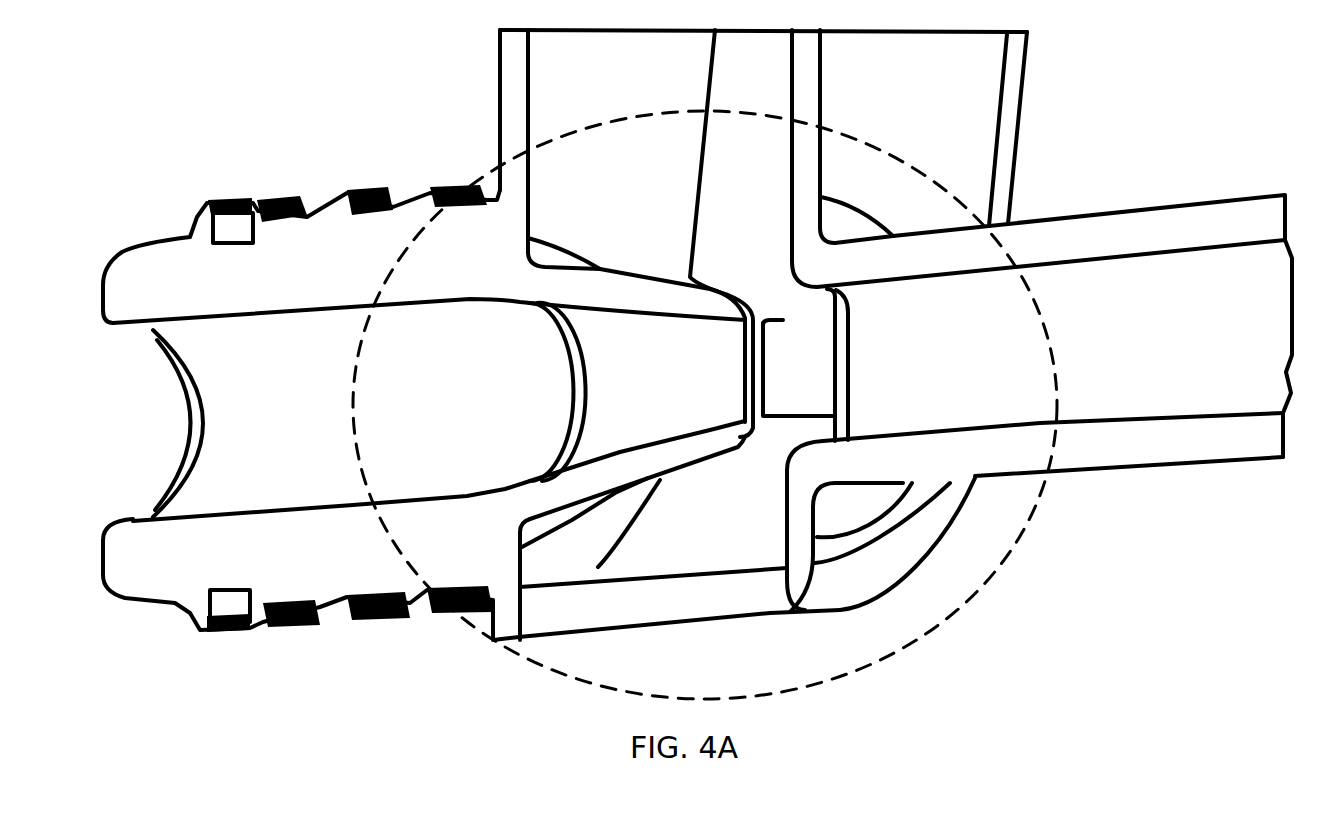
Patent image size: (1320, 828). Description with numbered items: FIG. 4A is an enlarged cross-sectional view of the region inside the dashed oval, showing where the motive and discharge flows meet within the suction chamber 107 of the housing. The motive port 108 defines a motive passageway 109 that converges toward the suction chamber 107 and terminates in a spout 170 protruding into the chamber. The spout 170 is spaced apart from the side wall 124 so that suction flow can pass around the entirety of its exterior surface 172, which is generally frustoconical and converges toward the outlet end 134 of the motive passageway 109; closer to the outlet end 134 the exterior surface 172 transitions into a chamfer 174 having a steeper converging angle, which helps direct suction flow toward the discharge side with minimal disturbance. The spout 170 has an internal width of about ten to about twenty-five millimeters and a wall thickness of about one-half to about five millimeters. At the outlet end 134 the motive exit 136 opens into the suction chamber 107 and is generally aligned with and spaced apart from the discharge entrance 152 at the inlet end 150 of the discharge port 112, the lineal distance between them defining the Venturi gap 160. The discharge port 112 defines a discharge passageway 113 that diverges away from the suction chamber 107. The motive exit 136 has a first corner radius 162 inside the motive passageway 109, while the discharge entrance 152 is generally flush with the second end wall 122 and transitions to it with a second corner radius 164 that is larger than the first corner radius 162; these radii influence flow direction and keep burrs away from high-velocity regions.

The suction chamber 107 is at (733, 551).
The motive port 108 is at (311, 412).
The motive passageway 109 is at (588, 432).
The discharge port 112 is at (1100, 470).
The discharge passageway 113 is at (990, 277).
The second end wall 122 is at (800, 158).
The side wall 124 is at (685, 607).
The outlet end 134 is at (691, 277).
The motive exit 136 is at (784, 394).
The inlet end 150 is at (852, 487).
The discharge entrance 152 is at (814, 330).
The Venturi gap 160 is at (833, 322).
The first corner radius 162 is at (745, 340).
The second corner radius 164 is at (848, 405).
The spout 170 is at (590, 303).
The exterior surface 172 is at (618, 270).
The chamfer 174 is at (732, 452).